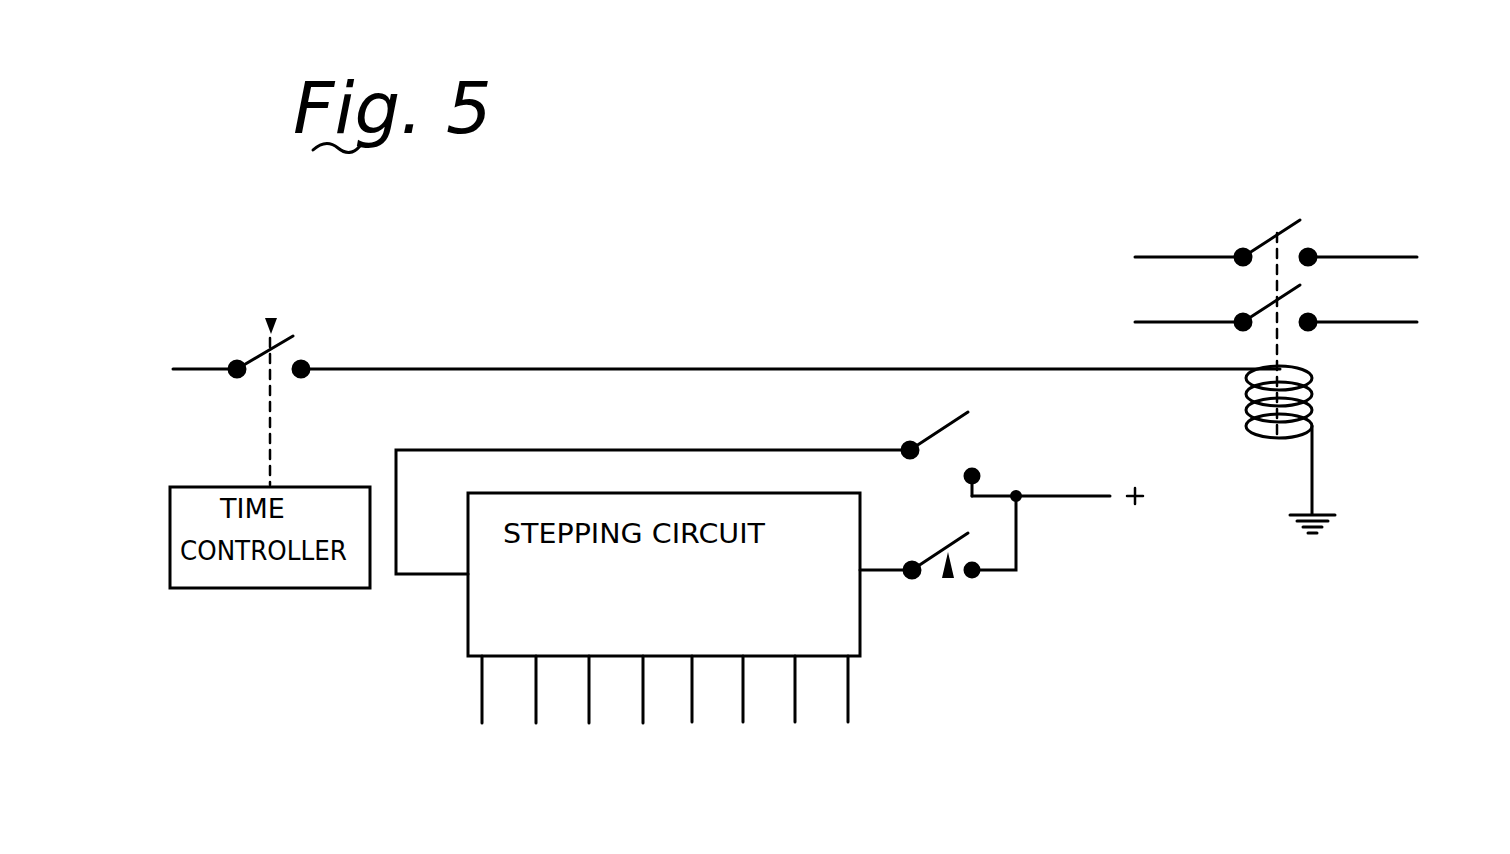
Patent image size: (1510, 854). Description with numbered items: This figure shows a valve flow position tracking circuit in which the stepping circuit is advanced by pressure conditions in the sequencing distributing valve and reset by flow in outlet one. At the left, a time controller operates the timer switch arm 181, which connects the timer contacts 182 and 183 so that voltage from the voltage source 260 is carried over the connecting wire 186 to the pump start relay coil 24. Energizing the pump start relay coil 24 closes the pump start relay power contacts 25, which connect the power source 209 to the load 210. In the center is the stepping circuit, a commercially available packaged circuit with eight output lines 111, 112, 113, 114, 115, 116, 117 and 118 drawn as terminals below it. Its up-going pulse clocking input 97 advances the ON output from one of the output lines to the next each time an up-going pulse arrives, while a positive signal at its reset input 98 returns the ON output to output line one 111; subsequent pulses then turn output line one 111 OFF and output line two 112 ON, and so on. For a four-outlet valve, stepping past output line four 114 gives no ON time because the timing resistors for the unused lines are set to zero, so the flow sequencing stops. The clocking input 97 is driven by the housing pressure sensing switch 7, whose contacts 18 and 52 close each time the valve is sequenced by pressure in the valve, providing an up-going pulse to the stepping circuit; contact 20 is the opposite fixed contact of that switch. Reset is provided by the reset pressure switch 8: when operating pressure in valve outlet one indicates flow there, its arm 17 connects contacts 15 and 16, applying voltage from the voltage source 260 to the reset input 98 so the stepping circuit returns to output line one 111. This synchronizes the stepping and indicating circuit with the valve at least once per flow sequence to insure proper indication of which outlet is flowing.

The housing pressure sensing switch 7 is at (933, 402).
The reset pressure switch 8 is at (948, 576).
The contact of reset pressure switch 15 is at (978, 578).
The contact of reset pressure switch 16 is at (916, 578).
The arm of pressure switch 17 is at (948, 550).
The contact of housing pressure switch 18 is at (904, 442).
The contact 20 is at (937, 425).
The pump start relay coil 24 is at (1247, 400).
The pump start relay power contacts 25 is at (1252, 233).
The contact of housing pressure switch 52 is at (966, 482).
The clocking input 97 is at (467, 576).
The reset input 98 is at (862, 576).
The output line one 111 is at (482, 672).
The output line two 112 is at (535, 683).
The output line three 113 is at (588, 690).
The output line four 114 is at (641, 695).
The output line five 115 is at (690, 690).
The output line six 116 is at (741, 690).
The output line seven 117 is at (793, 700).
The output line eight 118 is at (850, 675).
The timer switch arm 181 is at (272, 320).
The timer contact 182 is at (237, 379).
The timer contact 183 is at (306, 362).
The connecting wire 186 is at (538, 368).
The power source 209 is at (975, 293).
The load 210 is at (1425, 272).
The voltage source 260 is at (209, 369).